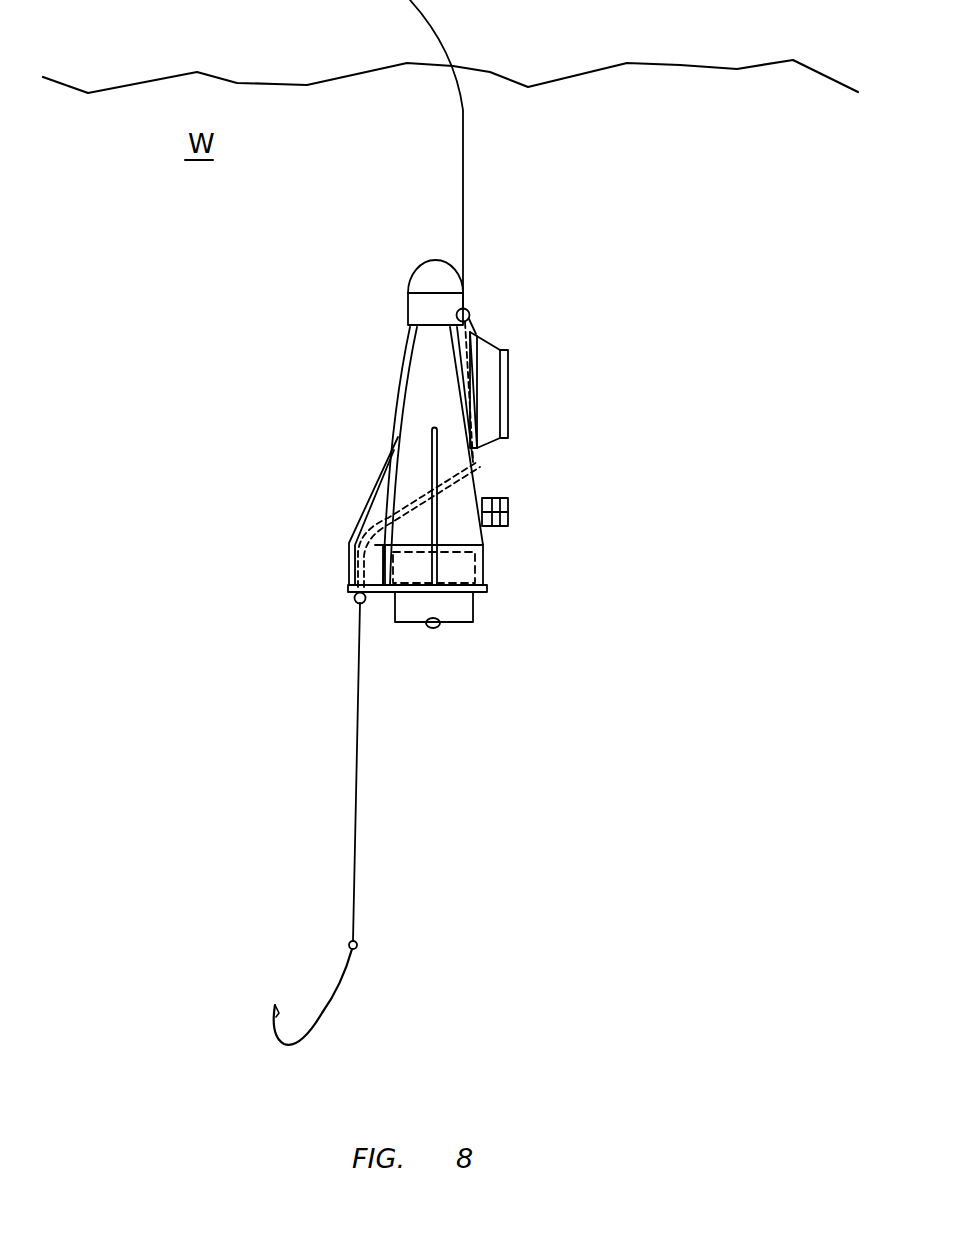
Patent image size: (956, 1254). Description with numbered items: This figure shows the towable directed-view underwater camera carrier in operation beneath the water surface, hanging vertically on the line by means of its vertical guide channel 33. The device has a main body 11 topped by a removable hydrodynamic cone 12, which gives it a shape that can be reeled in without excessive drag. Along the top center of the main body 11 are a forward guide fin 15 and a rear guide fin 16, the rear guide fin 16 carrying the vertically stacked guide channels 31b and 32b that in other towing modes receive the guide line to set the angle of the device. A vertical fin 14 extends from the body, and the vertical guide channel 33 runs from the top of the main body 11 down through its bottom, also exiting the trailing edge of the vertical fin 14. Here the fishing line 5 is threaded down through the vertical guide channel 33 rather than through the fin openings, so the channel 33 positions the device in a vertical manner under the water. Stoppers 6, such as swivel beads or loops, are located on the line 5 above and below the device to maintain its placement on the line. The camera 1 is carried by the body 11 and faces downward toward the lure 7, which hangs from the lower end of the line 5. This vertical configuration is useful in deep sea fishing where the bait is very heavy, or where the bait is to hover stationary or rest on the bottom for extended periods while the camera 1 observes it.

The camera 1 is at (463, 608).
The fishing line 5 is at (463, 187).
The stopper 6 is at (468, 312).
The lure 7 is at (332, 992).
The main body 11 is at (427, 405).
The hydrodynamic cone 12 is at (428, 277).
The vertical fin 14 is at (373, 517).
The forward guide fin 15 is at (487, 387).
The rear guide fin 16 is at (510, 517).
The guide channel 31b is at (475, 320).
The guide channel 32b is at (485, 492).
The vertical guide channel 33 is at (477, 462).